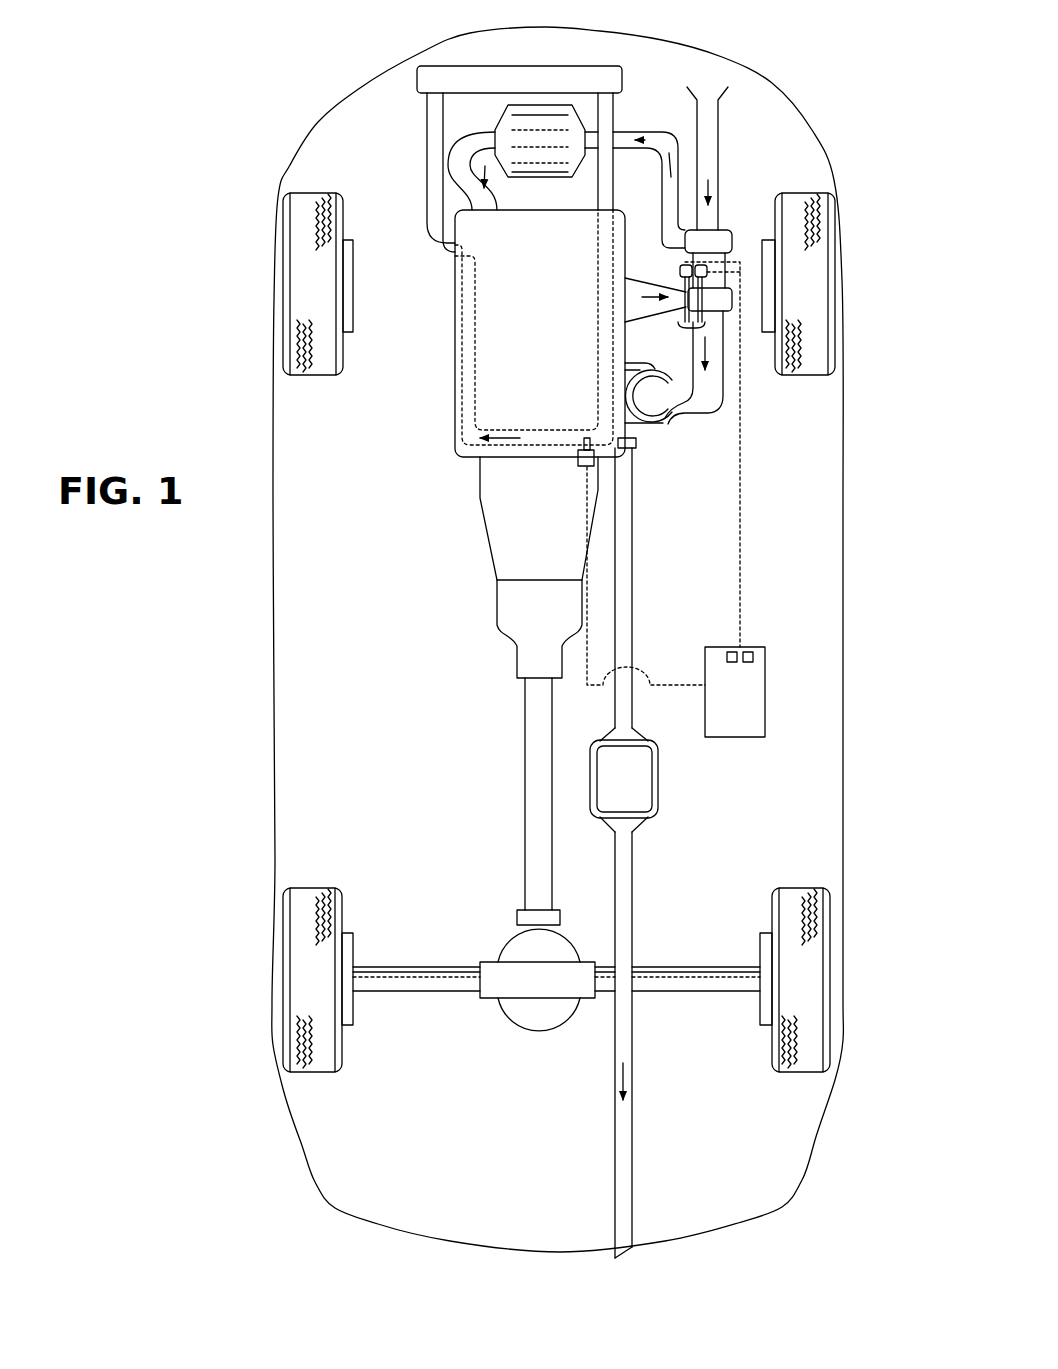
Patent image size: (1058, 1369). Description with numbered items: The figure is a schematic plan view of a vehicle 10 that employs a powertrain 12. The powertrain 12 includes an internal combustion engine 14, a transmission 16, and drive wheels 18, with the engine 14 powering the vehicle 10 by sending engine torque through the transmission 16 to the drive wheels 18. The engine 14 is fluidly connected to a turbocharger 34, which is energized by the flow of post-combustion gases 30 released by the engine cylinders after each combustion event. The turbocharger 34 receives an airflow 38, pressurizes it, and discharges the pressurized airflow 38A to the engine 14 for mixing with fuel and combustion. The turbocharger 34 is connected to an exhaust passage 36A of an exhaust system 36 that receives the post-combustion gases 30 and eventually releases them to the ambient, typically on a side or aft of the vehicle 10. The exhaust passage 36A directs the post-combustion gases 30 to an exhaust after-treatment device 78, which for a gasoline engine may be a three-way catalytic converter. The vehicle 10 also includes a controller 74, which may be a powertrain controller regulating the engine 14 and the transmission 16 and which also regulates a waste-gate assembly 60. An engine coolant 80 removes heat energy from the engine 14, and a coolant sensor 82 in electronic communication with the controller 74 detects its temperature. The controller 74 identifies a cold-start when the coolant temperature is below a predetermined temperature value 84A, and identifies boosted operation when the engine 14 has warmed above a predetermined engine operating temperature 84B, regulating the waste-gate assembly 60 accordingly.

The vehicle 10 is at (218, 636).
The powertrain 12 is at (350, 160).
The internal combustion engine 14 is at (552, 342).
The transmission 16 is at (552, 565).
The drive wheels 18 is at (303, 970).
The post-combustion gases 30 is at (668, 260).
The turbocharger 34 is at (736, 227).
The exhaust system 36 is at (645, 843).
The exhaust passage 36A is at (728, 405).
The airflow 38 is at (712, 192).
The pressurized airflow 38A is at (471, 169).
The waste-gate assembly 60 is at (670, 258).
The controller 74 is at (746, 704).
The exhaust after-treatment device 78 is at (657, 425).
The engine coolant 80 is at (497, 437).
The coolant sensor 82 is at (578, 462).
The predetermined temperature value 84A is at (748, 650).
The predetermined engine operating temperature 84B is at (727, 650).